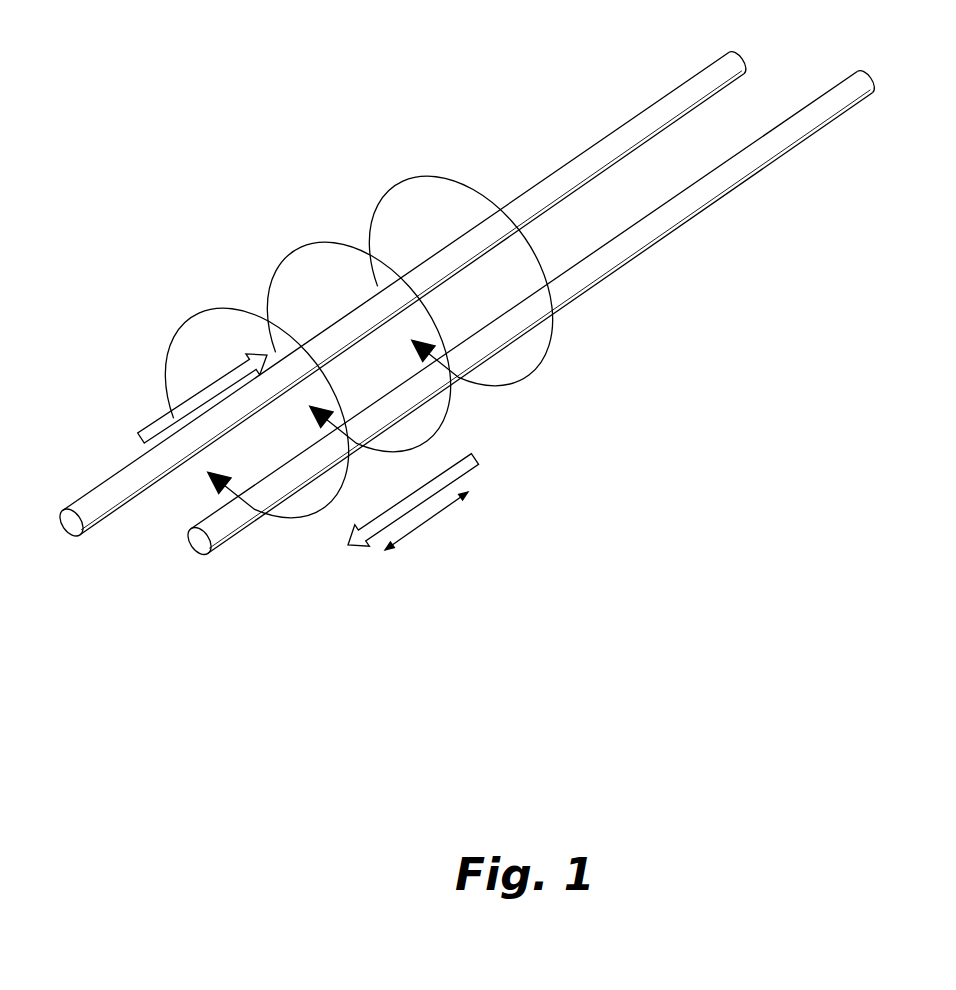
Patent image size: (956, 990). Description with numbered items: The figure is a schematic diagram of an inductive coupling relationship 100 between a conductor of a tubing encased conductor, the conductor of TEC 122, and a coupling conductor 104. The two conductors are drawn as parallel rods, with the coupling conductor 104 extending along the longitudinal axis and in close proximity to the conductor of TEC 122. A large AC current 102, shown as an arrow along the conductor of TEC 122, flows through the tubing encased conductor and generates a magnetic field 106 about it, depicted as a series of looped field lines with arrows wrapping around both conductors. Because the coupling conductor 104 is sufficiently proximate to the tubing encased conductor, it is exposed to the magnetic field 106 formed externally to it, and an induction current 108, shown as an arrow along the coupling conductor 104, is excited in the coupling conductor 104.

The inductive coupling relationship 100 is at (110, 41).
The AC current 102 is at (155, 430).
The coupling conductor 104 is at (222, 532).
The magnetic field 106 is at (207, 245).
The induction current 108 is at (478, 465).
The conductor of TEC 122 is at (88, 502).